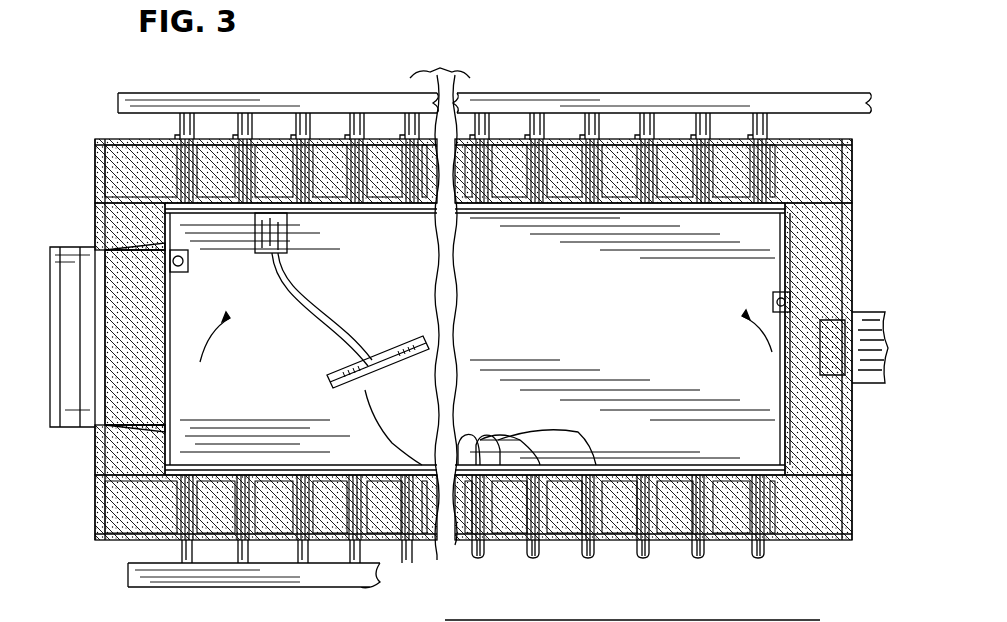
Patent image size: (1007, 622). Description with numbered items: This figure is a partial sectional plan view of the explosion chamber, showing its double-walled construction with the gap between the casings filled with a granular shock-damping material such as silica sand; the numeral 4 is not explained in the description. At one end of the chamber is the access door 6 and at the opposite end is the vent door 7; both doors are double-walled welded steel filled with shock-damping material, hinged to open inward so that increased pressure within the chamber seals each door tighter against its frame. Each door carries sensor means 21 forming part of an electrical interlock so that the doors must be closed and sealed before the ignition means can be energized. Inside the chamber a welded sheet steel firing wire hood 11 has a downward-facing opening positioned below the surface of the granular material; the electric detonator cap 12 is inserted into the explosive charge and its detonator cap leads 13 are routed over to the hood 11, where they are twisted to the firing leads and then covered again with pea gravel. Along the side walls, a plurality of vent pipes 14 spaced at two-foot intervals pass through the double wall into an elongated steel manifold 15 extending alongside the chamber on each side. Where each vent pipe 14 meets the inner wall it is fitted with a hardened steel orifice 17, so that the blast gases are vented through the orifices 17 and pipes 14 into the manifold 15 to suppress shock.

The insulated housing 4 is at (852, 160).
The access door 6 is at (165, 333).
The vent door 7 is at (842, 372).
The firing wire hood 11 is at (290, 232).
The electric detonator cap 12 is at (432, 478).
The detonator cap leads 13 is at (360, 358).
The vent pipes 14 is at (772, 128).
The manifold 15 is at (650, 105).
The hardened steel orifice 17 is at (452, 440).
The sensor means 21 is at (835, 368).